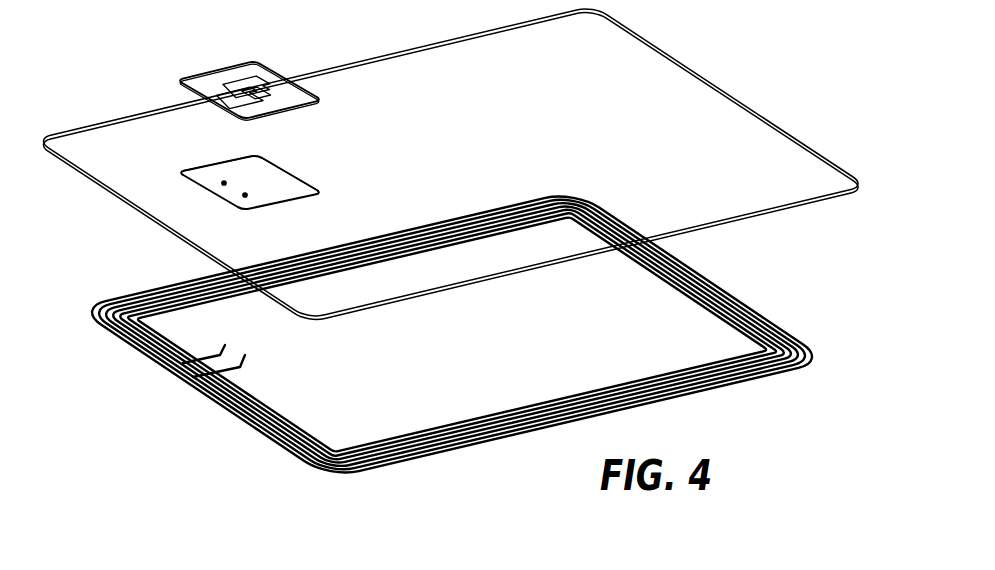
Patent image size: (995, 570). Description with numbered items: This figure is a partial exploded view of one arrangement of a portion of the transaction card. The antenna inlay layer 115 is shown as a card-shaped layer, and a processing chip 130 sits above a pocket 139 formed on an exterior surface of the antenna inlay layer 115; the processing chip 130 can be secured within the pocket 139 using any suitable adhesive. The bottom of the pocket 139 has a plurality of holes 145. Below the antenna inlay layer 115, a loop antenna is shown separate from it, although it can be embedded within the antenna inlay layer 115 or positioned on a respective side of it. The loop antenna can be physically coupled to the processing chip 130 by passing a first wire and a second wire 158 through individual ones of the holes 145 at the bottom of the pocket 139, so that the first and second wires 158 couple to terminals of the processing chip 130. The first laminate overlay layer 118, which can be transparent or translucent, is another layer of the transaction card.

The antenna inlay layer 115 is at (110, 196).
The first laminate overlay layer 118 is at (248, 436).
The processing chip 130 is at (217, 68).
The pocket 139 is at (230, 148).
The holes 145 is at (221, 176).
The wire 158 is at (264, 359).